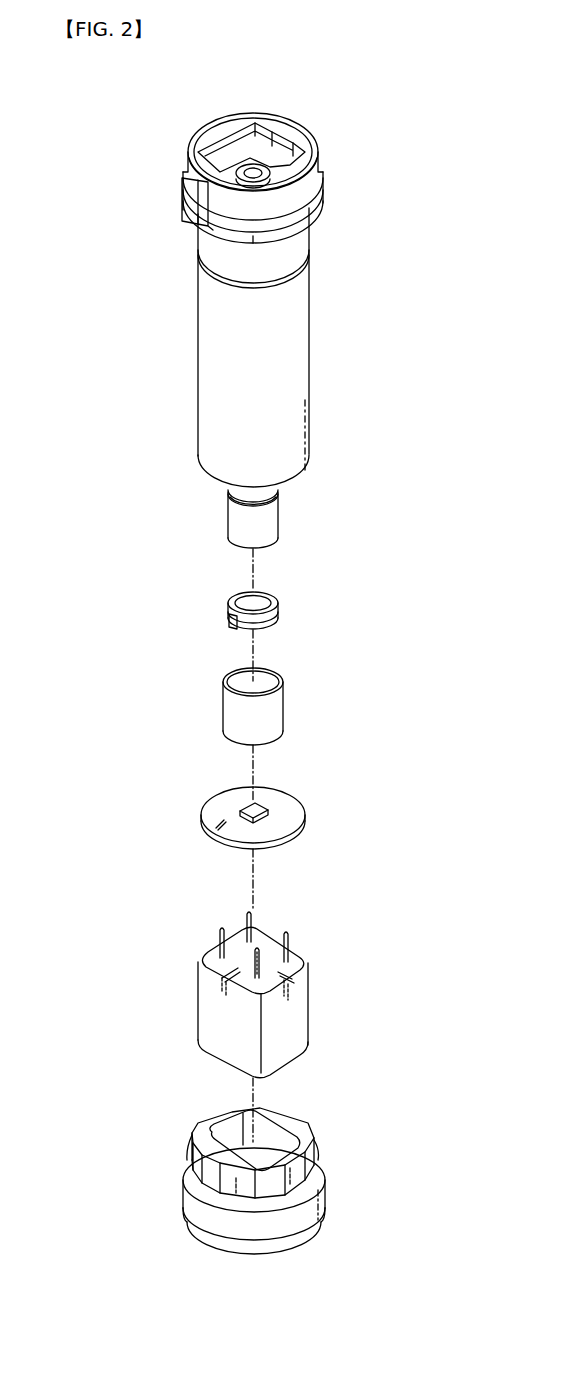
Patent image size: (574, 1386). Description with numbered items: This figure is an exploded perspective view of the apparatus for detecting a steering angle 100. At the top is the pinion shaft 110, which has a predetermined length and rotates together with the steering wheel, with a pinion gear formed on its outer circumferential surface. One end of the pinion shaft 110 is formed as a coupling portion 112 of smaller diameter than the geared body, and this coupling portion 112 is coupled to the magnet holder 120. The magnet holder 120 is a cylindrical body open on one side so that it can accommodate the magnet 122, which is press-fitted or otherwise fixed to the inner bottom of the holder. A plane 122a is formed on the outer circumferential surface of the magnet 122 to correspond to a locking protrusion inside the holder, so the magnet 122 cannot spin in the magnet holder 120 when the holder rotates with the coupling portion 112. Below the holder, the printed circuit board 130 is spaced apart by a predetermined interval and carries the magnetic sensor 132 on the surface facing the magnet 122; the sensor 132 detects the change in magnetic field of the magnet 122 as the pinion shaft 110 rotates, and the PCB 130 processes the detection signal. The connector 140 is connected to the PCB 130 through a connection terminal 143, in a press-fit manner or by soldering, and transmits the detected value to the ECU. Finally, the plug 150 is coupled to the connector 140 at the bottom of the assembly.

The apparatus for detecting a steering angle 100 is at (108, 119).
The pinion shaft 110 is at (345, 253).
The coupling portion 112 is at (279, 505).
The magnet holder 120 is at (284, 698).
The magnet 122 is at (279, 612).
The plane 122a is at (229, 622).
The printed circuit board 130 is at (297, 826).
The magnetic sensor 132 is at (268, 808).
The connector 140 is at (309, 1005).
The connection terminal 143 is at (289, 935).
The plug 150 is at (326, 1185).